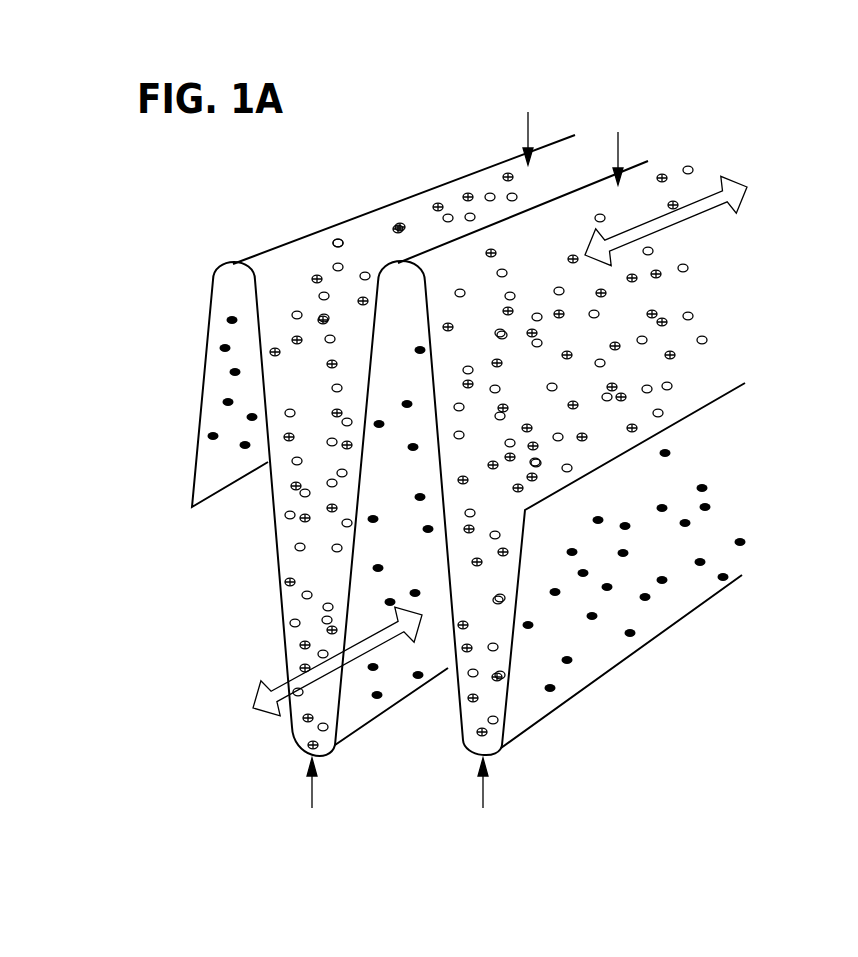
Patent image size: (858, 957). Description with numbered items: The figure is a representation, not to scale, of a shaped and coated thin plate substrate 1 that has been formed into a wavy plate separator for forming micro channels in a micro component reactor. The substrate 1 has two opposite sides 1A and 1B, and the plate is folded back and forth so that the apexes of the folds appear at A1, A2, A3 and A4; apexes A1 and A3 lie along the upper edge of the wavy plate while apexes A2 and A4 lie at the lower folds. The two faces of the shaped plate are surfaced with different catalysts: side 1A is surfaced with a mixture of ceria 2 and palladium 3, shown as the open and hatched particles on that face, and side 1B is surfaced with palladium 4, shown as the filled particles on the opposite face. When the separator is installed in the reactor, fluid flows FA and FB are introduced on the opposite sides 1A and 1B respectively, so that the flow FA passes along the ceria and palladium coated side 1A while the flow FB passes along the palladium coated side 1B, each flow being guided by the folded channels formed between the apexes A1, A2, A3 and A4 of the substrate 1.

The shaped and coated thin plate substrate 1 is at (212, 289).
The side 1A is at (550, 187).
The side 1B is at (218, 472).
The ceria 2 is at (315, 278).
The palladium 3 is at (338, 243).
The palladium 4 is at (628, 632).
The apex A1 is at (532, 126).
The apex A2 is at (315, 799).
The apex A3 is at (623, 144).
The apex A4 is at (486, 799).
The fluid flow FA is at (665, 222).
The fluid flow FB is at (287, 690).